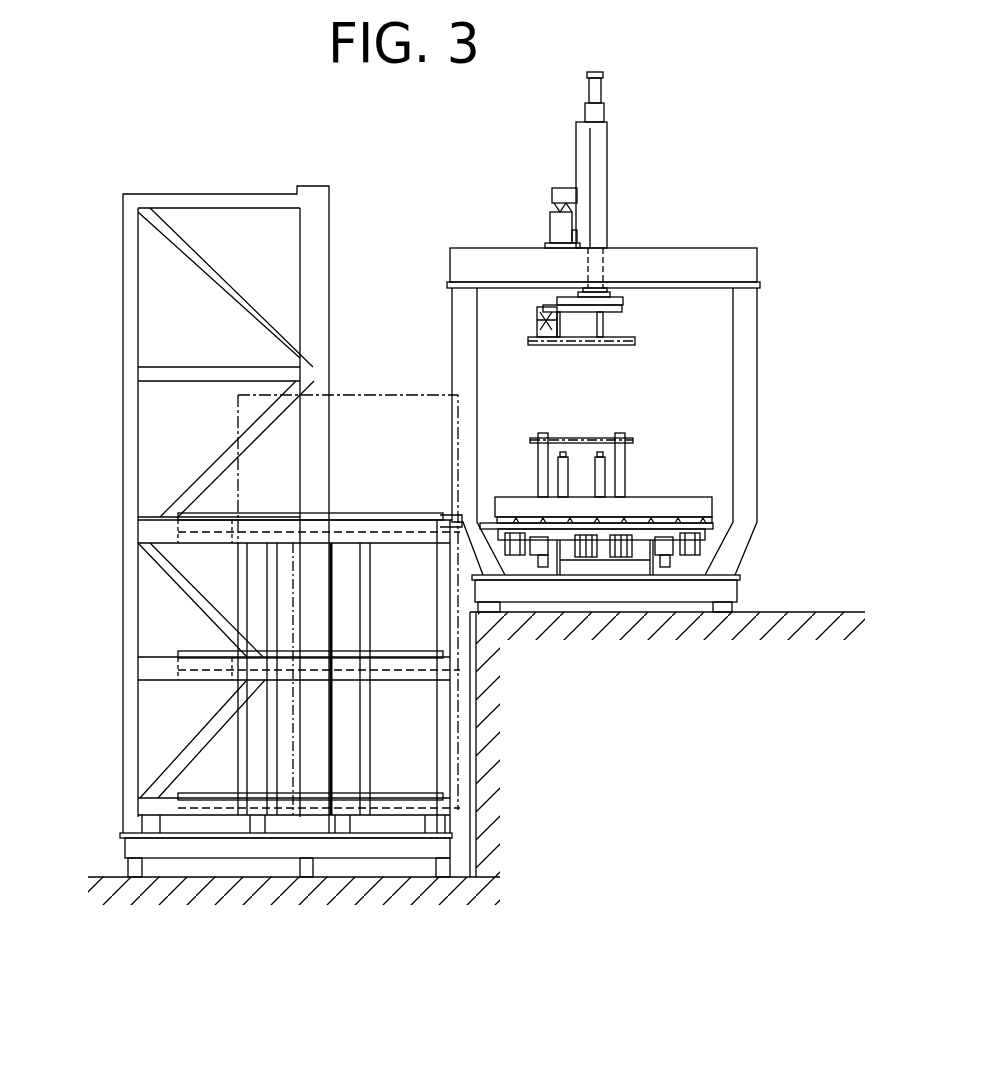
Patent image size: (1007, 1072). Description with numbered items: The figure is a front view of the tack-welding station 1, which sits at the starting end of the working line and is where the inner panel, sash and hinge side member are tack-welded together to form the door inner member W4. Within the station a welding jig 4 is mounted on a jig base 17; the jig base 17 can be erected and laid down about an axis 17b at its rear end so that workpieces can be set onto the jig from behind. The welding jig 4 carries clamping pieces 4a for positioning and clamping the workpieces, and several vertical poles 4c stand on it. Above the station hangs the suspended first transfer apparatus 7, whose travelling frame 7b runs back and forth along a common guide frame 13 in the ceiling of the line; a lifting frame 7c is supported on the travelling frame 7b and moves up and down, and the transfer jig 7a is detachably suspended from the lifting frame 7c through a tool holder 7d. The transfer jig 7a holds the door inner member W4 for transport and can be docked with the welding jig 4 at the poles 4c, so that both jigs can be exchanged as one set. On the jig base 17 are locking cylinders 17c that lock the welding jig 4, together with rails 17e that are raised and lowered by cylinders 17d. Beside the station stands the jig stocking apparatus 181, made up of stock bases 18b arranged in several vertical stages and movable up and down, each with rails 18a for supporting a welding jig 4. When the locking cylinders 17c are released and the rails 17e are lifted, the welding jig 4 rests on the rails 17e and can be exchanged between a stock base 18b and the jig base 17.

The jig stocking apparatus 181 is at (118, 312).
The rails 18a is at (388, 513).
The stock bases 18b is at (212, 522).
The tack-welding station 1 is at (590, 391).
The first transfer apparatus 7 is at (581, 207).
The transfer jig 7a is at (537, 306).
The travelling frame 7b is at (557, 195).
The lifting frame 7c is at (597, 200).
The tool holder 7d is at (620, 298).
The common guide frame 13 is at (557, 228).
The door inner member W4 is at (630, 345).
The welding jig 4 is at (708, 500).
The clamping pieces 4a is at (560, 438).
The poles 4c is at (540, 468).
The jig base 17 is at (565, 550).
The axis 17b is at (600, 545).
The locking cylinders 17c is at (520, 556).
The cylinders 17d is at (541, 565).
The rails 17e is at (713, 526).